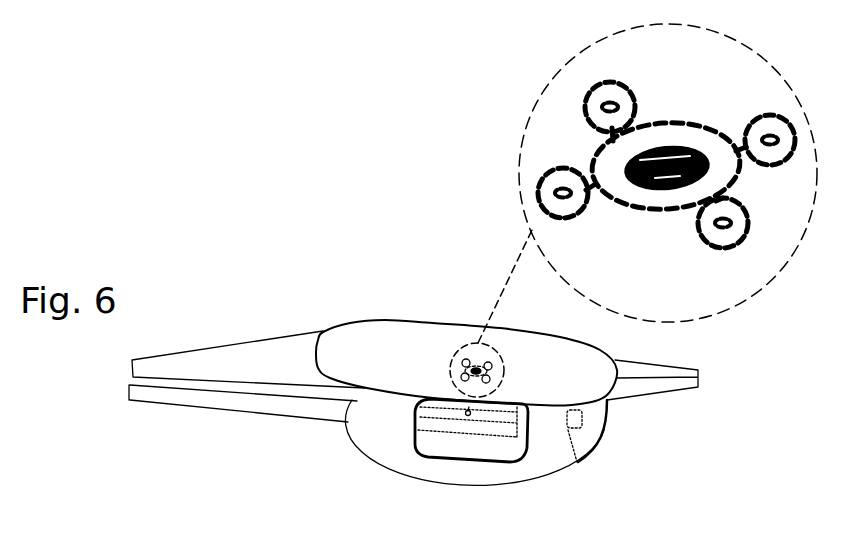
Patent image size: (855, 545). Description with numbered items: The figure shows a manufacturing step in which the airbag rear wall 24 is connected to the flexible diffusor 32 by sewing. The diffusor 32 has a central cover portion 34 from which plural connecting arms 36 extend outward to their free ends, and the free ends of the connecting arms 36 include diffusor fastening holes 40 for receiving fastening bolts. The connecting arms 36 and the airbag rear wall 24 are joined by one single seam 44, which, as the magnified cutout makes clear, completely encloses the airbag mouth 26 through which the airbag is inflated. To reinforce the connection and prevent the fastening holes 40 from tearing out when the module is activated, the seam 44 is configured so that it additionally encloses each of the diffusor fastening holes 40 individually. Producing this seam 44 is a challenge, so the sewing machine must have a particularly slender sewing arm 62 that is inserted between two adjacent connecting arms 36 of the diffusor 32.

The airbag rear wall 24 is at (387, 343).
The airbag mouth 26 is at (658, 187).
The flexible diffusor 32 is at (314, 446).
The central cover portion 34 is at (470, 482).
The connecting arms 36 is at (390, 410).
The diffusor fastening holes 40 is at (617, 107).
The seam 44 is at (473, 358).
The sewing arm 62 is at (458, 425).